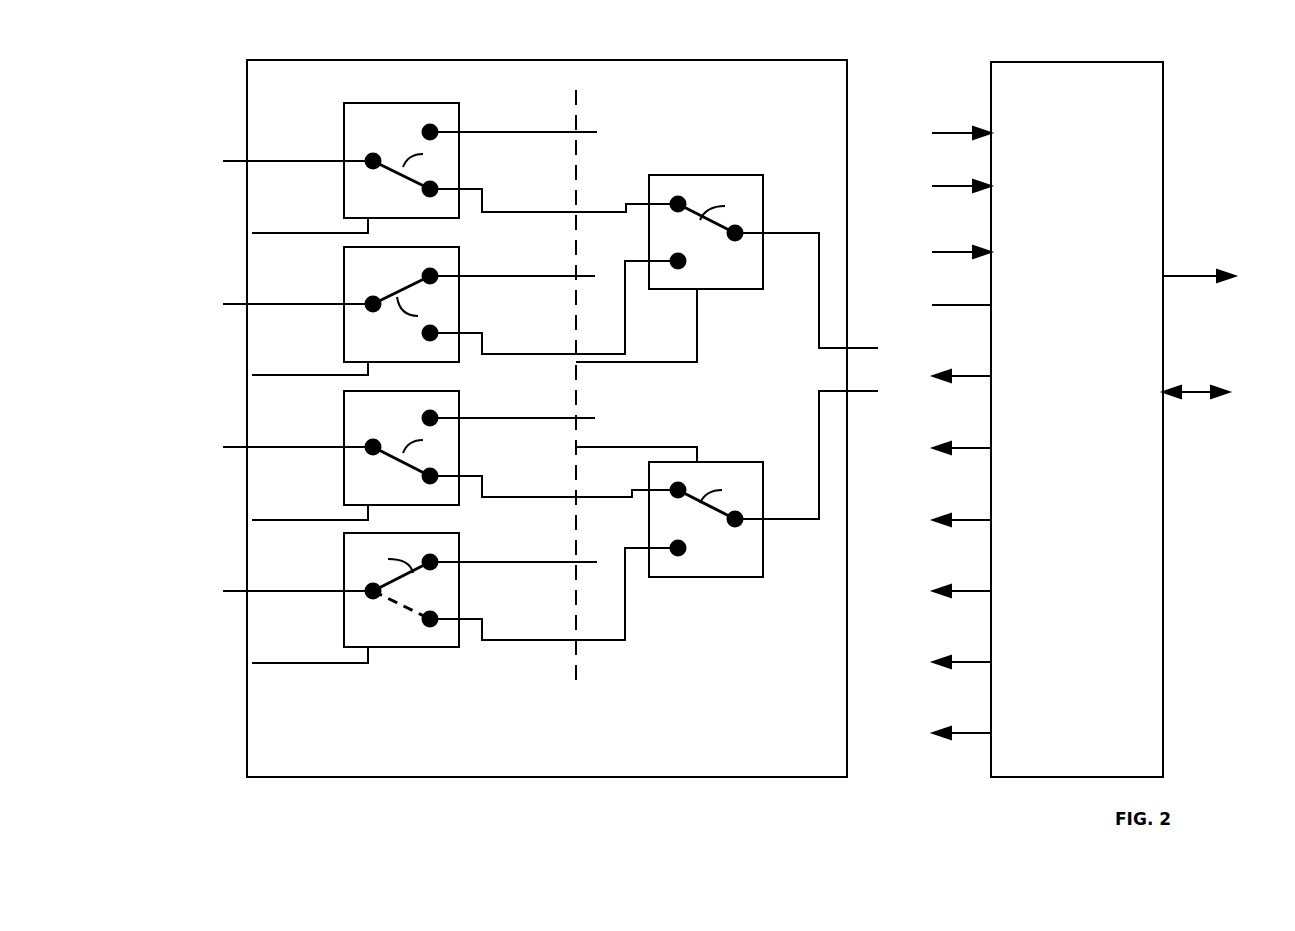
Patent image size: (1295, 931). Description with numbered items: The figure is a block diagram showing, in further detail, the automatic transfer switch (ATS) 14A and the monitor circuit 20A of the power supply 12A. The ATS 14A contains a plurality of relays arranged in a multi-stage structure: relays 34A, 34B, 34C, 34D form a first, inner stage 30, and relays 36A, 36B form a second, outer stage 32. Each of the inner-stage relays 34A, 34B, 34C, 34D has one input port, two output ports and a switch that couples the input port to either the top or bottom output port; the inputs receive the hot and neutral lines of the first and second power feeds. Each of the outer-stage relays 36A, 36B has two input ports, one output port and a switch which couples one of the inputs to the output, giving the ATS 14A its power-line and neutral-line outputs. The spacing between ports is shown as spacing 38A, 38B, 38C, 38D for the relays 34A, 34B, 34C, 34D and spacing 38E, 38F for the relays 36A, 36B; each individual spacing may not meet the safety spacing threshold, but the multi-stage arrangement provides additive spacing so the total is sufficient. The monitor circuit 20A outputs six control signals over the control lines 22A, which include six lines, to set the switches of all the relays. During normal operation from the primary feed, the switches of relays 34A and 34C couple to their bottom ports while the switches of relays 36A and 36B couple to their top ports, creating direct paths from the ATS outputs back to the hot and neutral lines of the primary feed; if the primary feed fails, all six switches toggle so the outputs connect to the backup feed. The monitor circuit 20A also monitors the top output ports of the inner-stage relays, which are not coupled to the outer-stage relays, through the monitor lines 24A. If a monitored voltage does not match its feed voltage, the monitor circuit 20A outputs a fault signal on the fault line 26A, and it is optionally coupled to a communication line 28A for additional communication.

The power supply 12A is at (1202, 90).
The automatic transfer switch (ATS) 14A is at (825, 110).
The monitor circuit 20A is at (1060, 450).
The control lines 22A is at (991, 376).
The monitor lines 24A is at (991, 133).
The fault line 26A is at (1190, 276).
The communication line 28A is at (1192, 392).
The first, inner stage 30 is at (347, 690).
The second, outer stage 32 is at (762, 690).
The relay 34A is at (397, 103).
The relay 34B is at (458, 250).
The relay 34C is at (455, 391).
The relay 34D is at (458, 536).
The relay 36A is at (715, 175).
The relay 36B is at (717, 462).
The spacing 38A is at (483, 132).
The spacing 38B is at (483, 276).
The spacing 38C is at (483, 418).
The spacing 38D is at (483, 562).
The spacing 38E is at (649, 204).
The spacing 38F is at (649, 490).